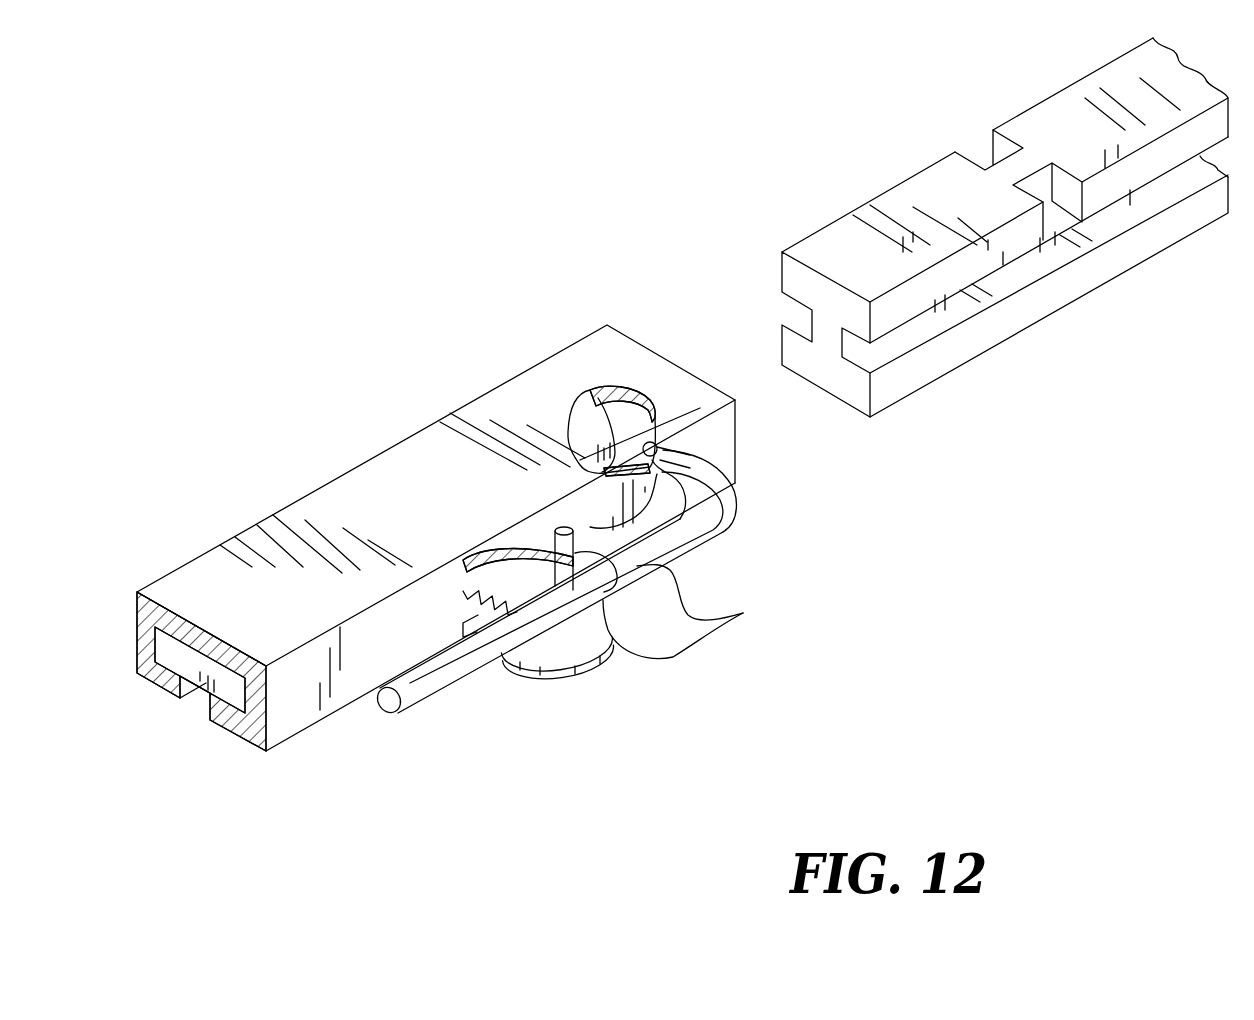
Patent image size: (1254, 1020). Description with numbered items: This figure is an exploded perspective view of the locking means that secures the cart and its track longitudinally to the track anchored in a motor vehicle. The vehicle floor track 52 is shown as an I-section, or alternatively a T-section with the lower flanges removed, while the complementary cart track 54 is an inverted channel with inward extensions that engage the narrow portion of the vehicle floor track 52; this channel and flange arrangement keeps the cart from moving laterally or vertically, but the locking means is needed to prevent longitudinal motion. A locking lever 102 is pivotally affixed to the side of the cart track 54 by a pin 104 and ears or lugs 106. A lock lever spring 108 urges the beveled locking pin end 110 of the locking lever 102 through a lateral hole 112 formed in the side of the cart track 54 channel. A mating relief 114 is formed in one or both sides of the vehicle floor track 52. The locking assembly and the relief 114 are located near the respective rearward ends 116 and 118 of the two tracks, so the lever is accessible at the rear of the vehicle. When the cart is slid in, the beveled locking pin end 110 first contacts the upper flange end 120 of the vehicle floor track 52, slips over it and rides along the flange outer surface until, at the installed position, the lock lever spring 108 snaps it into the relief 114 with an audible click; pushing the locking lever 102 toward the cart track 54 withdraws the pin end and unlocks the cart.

The vehicle floor track 52 is at (1060, 92).
The cart track 54 is at (363, 463).
The locking lever 102 is at (473, 670).
The pin 104 is at (513, 553).
The ears or lugs 106 is at (743, 613).
The lock lever spring 108 is at (463, 593).
The beveled locking pin end 110 is at (598, 395).
The lateral hole 112 is at (654, 443).
The relief 114 is at (1073, 190).
The rearward end of cart track 116 is at (297, 733).
The rearward end of vehicle track 118 is at (903, 423).
The upper flange end 120 is at (863, 298).